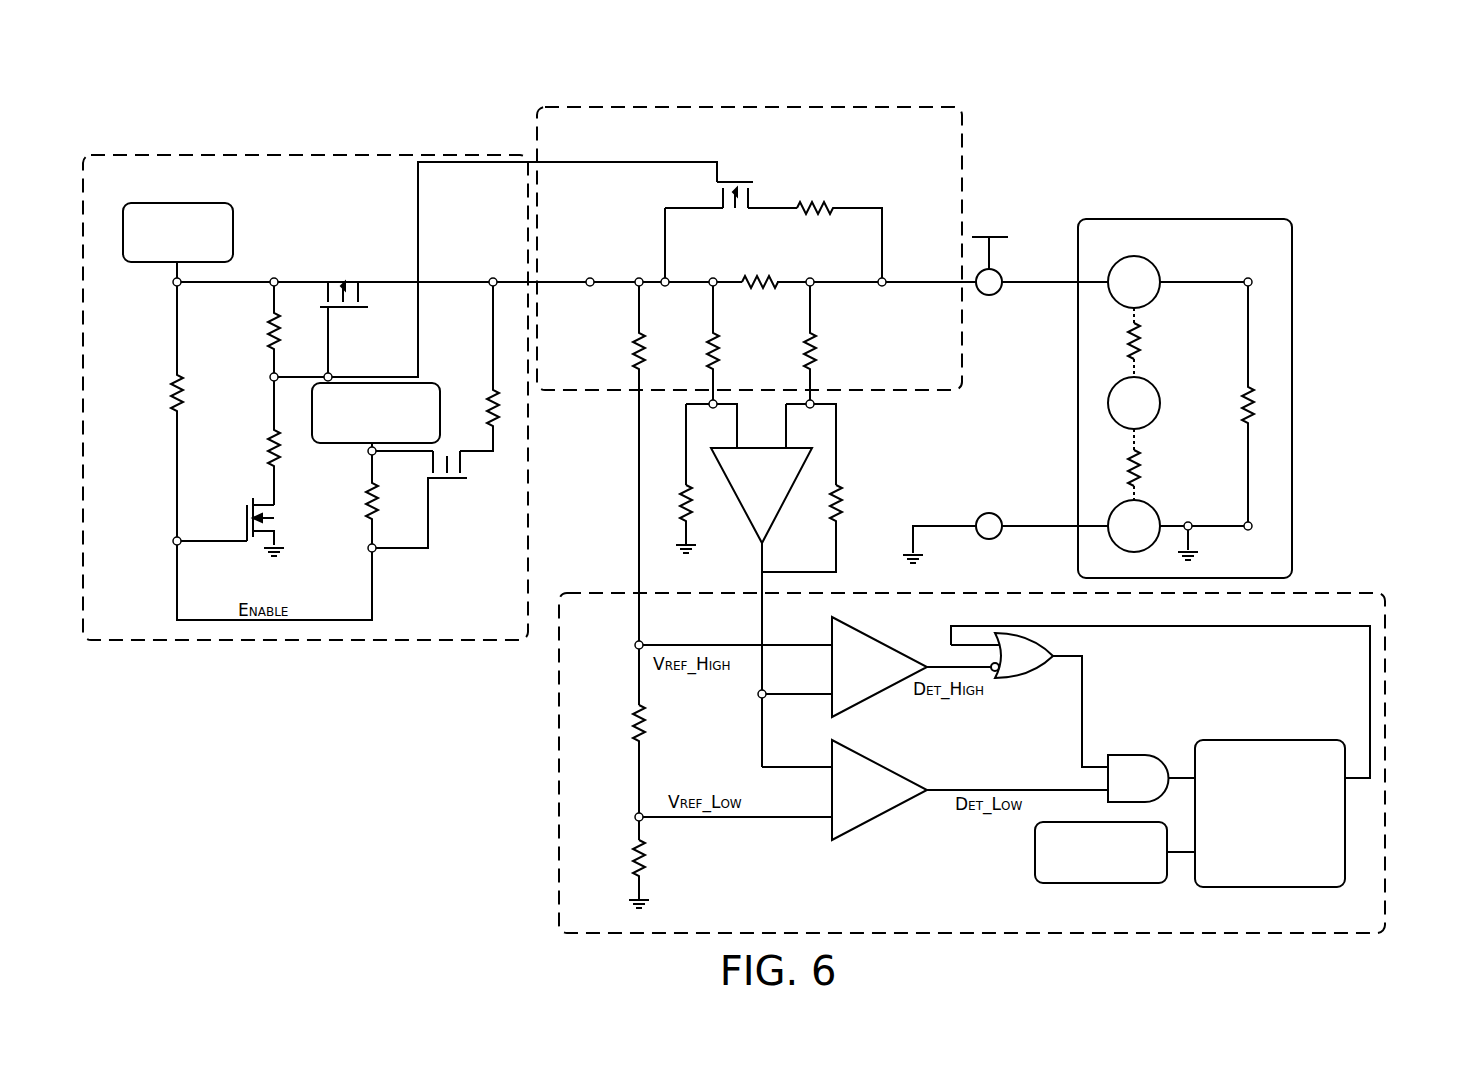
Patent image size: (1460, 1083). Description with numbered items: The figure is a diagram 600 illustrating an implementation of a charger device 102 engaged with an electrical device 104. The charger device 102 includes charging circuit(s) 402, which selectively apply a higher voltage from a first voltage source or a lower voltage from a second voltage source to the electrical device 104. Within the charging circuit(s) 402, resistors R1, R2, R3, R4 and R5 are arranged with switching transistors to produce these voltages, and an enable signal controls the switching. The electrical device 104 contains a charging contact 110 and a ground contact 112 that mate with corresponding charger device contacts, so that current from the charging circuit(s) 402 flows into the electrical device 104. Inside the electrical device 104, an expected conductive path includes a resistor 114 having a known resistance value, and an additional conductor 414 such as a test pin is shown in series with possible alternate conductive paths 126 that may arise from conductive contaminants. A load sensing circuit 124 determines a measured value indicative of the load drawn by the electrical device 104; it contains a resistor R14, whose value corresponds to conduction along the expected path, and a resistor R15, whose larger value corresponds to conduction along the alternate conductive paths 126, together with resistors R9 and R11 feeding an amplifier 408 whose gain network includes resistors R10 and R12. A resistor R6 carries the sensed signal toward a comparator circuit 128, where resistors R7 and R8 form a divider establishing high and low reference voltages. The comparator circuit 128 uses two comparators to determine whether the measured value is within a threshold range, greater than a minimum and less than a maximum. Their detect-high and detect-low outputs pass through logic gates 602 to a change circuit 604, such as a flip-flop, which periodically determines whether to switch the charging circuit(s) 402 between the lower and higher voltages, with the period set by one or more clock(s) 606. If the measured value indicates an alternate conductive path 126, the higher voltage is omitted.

The charger device 102 is at (336, 99).
The diagram 600 is at (1372, 118).
The charging circuit(s) 402 is at (305, 397).
The load sensing circuit 124 is at (749, 248).
The resistor R1 is at (256, 451).
The resistor R2 is at (258, 329).
The resistor R3 is at (258, 441).
The resistor R4 is at (355, 499).
The resistor R5 is at (489, 366).
The resistor R6 is at (625, 493).
The resistor R7 is at (624, 772).
The resistor R8 is at (626, 874).
The resistor R9 is at (726, 343).
The resistor R10 is at (669, 519).
The resistor R11 is at (828, 343).
The resistor R12 is at (821, 528).
The resistor R14 is at (839, 242).
The resistor R15 is at (759, 271).
The amplifier 408 is at (761, 607).
The electrical device 104 is at (1185, 398).
The charging contact 110 is at (1134, 282).
The alternate conductive path 126 is at (1115, 404).
The additional conductor 414 is at (1134, 403).
The ground contact 112 is at (1134, 526).
The resistor 114 is at (1207, 421).
The comparator circuit 128 is at (972, 763).
The logic gates 602 is at (1052, 641).
The change circuit 604 is at (1270, 813).
The clock(s) 606 is at (1115, 852).